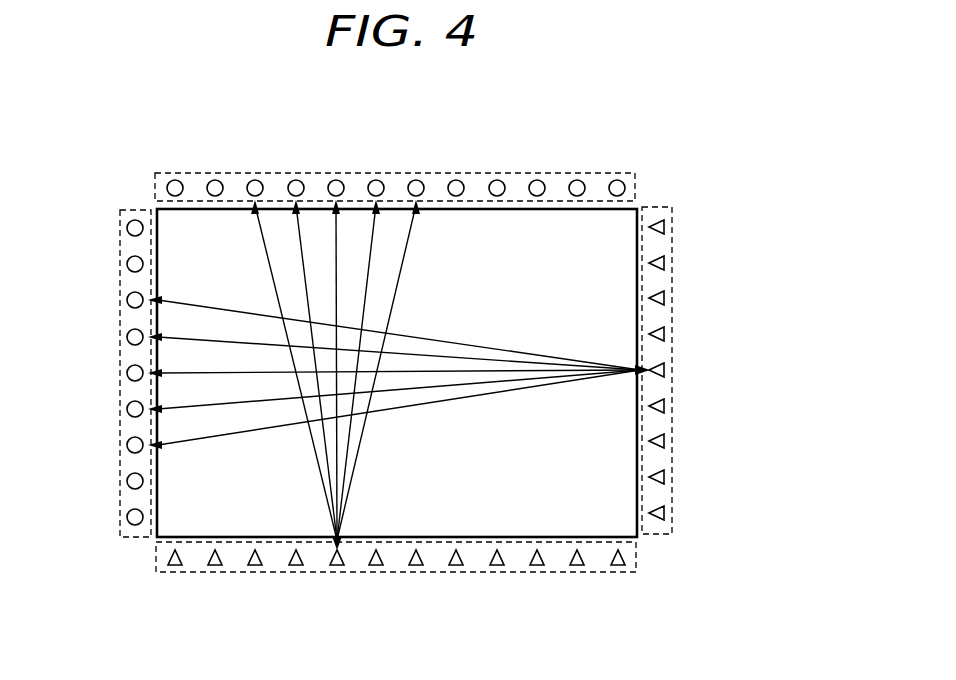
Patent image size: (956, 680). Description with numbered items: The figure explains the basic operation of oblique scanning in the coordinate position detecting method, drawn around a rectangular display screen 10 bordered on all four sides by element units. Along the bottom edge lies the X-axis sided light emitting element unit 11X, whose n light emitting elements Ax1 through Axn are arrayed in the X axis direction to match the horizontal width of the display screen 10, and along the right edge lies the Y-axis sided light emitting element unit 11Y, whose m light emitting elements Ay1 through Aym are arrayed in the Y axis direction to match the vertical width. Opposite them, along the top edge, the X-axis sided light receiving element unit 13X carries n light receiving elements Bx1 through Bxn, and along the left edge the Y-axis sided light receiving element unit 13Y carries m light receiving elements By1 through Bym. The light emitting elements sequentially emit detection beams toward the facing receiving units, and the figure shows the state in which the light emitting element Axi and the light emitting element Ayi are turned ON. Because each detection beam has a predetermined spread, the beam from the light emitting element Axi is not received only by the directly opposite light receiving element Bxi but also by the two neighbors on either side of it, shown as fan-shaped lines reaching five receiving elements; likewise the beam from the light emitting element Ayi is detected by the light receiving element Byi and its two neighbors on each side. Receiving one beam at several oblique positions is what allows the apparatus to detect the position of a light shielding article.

The display screen 10 is at (638, 207).
The X-axis sided light emitting element unit 11X is at (497, 572).
The Y-axis sided light emitting element unit 11Y is at (672, 268).
The X-axis sided light receiving element unit 13X is at (527, 173).
The Y-axis sided light receiving element unit 13Y is at (118, 270).
The light emitting element Ax1 is at (175, 566).
The light emitting element Axi is at (337, 566).
The light emitting element Axn is at (618, 566).
The light emitting element Ay1 is at (665, 227).
The light emitting element Ayi is at (665, 370).
The light emitting element Aym is at (665, 513).
The light receiving element Bx1 is at (176, 178).
The light receiving element Bxi is at (336, 178).
The light receiving element Bxn is at (617, 178).
The light receiving element By1 is at (127, 228).
The light receiving element Byi is at (127, 373).
The light receiving element Bym is at (127, 517).